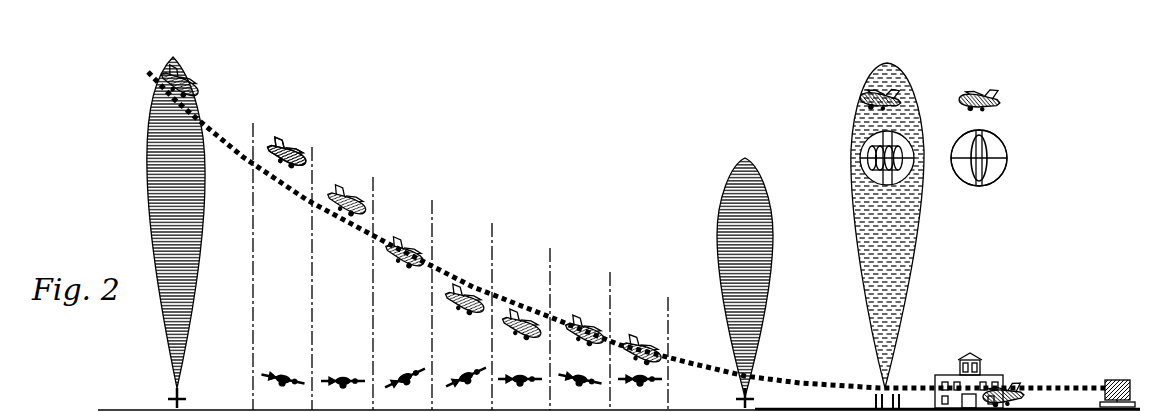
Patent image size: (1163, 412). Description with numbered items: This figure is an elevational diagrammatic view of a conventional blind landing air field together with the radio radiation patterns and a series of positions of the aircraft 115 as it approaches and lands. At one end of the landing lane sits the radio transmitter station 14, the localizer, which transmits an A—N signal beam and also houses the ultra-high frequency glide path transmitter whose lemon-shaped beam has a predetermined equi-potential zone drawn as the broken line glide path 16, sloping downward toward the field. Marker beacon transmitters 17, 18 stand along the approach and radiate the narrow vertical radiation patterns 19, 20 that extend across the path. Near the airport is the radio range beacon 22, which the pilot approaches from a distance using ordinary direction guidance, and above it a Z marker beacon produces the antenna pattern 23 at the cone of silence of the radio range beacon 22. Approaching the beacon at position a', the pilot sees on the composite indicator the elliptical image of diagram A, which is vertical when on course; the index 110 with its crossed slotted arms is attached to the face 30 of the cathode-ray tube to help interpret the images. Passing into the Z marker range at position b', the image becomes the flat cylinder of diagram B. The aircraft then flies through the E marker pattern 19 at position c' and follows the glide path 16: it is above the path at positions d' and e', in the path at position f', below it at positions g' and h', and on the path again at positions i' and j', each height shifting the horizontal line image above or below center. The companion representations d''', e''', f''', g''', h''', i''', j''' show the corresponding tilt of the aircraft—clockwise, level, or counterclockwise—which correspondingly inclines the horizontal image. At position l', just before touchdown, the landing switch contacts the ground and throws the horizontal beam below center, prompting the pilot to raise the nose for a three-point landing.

The radio transmitter station 14 is at (1112, 380).
The glide path 16 is at (440, 269).
The marker beacon transmitter 17 is at (172, 400).
The marker beacon transmitter 18 is at (738, 399).
The vertical radiation pattern 19 is at (196, 249).
The vertical radiation pattern 20 is at (768, 254).
The radio range beacon 22 is at (873, 401).
The antenna pattern 23 is at (905, 319).
The face 30 is at (1002, 174).
The index 110 is at (1006, 158).
The aircraft 115 is at (305, 158).
The diagram A is at (979, 168).
The diagram B is at (887, 170).
The aircraft position a' is at (995, 99).
The aircraft position b' is at (866, 97).
The aircraft position c' is at (194, 83).
The aircraft position d' is at (287, 148).
The aircraft position e' is at (347, 196).
The aircraft position f' is at (405, 248).
The aircraft position g' is at (465, 306).
The aircraft position h' is at (522, 331).
The aircraft position i' is at (585, 325).
The aircraft position j' is at (642, 343).
The aircraft position l' is at (1007, 383).
The aircraft tilt representation d''' is at (282, 388).
The aircraft tilt representation e''' is at (343, 391).
The aircraft tilt representation f''' is at (405, 385).
The aircraft tilt representation g''' is at (466, 384).
The aircraft tilt representation h''' is at (520, 390).
The aircraft tilt representation i''' is at (579, 388).
The aircraft tilt representation j''' is at (640, 390).